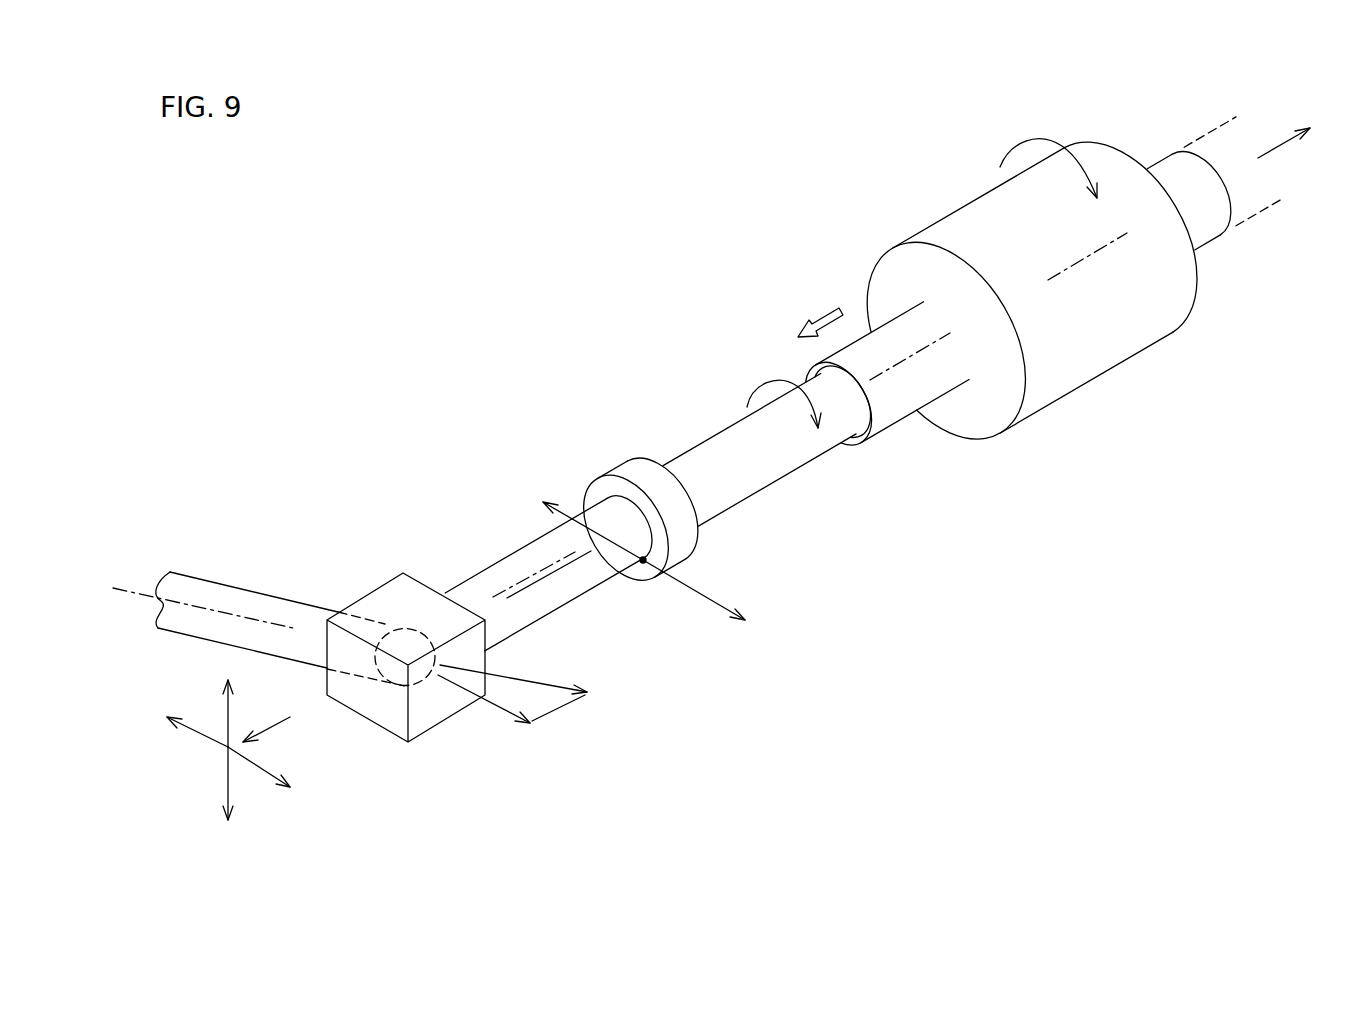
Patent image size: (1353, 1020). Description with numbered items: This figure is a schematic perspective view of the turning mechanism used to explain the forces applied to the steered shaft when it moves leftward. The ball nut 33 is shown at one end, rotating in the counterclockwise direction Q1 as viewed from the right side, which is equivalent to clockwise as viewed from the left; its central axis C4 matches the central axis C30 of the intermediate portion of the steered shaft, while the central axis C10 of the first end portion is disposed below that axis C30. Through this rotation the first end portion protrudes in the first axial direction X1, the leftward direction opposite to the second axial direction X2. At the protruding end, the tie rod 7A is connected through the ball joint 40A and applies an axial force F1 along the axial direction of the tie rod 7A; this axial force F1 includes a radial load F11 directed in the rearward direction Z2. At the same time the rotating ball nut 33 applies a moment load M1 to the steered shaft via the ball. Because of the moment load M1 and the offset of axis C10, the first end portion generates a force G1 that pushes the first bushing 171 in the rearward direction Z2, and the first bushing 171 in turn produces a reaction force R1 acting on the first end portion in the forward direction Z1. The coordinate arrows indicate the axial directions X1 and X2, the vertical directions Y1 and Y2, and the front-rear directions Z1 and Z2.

The tie rod 7A is at (222, 592).
The ball joint 40A is at (390, 598).
The central axis of the first end portion C10 is at (577, 560).
The central axis of the intermediate portion C30 is at (505, 588).
The first bushing 171 is at (644, 468).
The ball nut 33 is at (967, 222).
The central axis of the ball nut C4 is at (1090, 257).
The counterclockwise direction Q1 is at (1037, 137).
The second axial direction X2 is at (1272, 150).
The moment load M1 is at (765, 385).
The reaction force R1 is at (572, 507).
The force G1 is at (700, 589).
The axial force F1 is at (550, 685).
The radial load F11 is at (495, 712).
The first axial direction X1 is at (265, 718).
The first vertical direction Y1 is at (222, 718).
The second vertical direction Y2 is at (217, 787).
The forward direction Z1 is at (197, 745).
The rearward direction Z2 is at (252, 773).